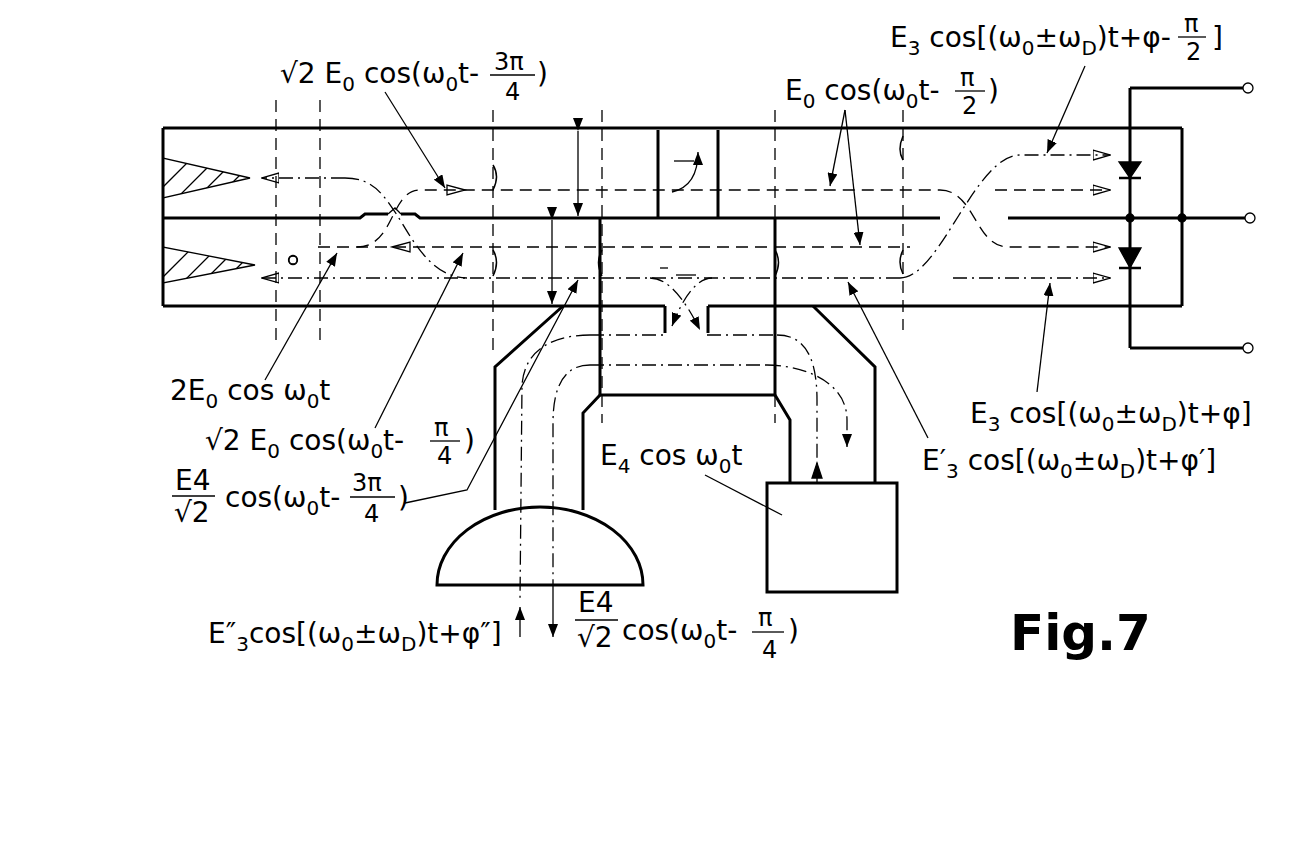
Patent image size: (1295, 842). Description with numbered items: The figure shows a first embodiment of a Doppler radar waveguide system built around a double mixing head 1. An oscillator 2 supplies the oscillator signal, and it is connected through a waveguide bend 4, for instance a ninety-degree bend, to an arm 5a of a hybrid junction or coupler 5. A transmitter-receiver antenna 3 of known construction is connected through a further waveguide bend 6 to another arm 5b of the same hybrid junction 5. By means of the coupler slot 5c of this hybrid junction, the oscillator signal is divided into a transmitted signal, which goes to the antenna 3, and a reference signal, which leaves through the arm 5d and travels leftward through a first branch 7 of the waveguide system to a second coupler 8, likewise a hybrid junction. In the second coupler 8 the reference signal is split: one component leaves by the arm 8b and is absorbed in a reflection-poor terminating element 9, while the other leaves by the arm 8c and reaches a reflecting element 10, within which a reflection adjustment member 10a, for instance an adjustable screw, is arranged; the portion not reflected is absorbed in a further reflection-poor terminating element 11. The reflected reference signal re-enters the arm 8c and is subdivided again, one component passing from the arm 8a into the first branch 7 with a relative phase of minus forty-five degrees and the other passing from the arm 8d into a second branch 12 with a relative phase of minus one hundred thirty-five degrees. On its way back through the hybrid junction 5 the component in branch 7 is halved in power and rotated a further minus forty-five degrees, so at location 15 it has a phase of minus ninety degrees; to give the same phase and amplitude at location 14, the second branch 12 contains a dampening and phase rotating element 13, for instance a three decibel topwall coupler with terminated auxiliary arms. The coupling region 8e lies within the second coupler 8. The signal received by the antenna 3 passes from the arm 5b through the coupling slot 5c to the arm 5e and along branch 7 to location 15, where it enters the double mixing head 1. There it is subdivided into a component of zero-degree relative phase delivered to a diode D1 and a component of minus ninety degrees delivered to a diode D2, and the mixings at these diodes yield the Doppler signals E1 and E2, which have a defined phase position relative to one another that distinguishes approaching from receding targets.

The double mixing head 1 is at (956, 164).
The oscillator 2 is at (832, 592).
The transmitter-receiver antenna 3 is at (560, 586).
The waveguide bend 4 is at (790, 428).
The hybrid junction 5 is at (696, 396).
The arm of hybrid junction 5a is at (807, 409).
The arm of hybrid junction 5b is at (555, 467).
The coupler slot 5c is at (690, 338).
The arm of hybrid junction 5d is at (579, 266).
The arm of hybrid junction 5e is at (799, 266).
The waveguide bend 6 is at (583, 467).
The first branch 7 is at (550, 258).
The second coupler 8 is at (378, 304).
The arm of second coupler 8a is at (514, 266).
The arm of second coupler 8b is at (364, 228).
The arm of second coupler 8c is at (610, 219).
The arm of second coupler 8d is at (514, 176).
The coupling slot 8e is at (392, 212).
The reflection-poor terminating element 9 is at (231, 172).
The reflecting element 10 is at (316, 302).
The reflection adjustment member 10a is at (291, 263).
The reflection-poor terminating element 11 is at (240, 254).
The second branch 12 is at (575, 180).
The dampening and phase rotating element 13 is at (648, 169).
The location in second branch 14 is at (882, 149).
The location in first branch 15 is at (882, 263).
The diode D1 is at (1149, 268).
The diode D2 is at (1149, 218).
The Doppler signal E1 is at (1195, 368).
The Doppler signal E2 is at (1195, 109).